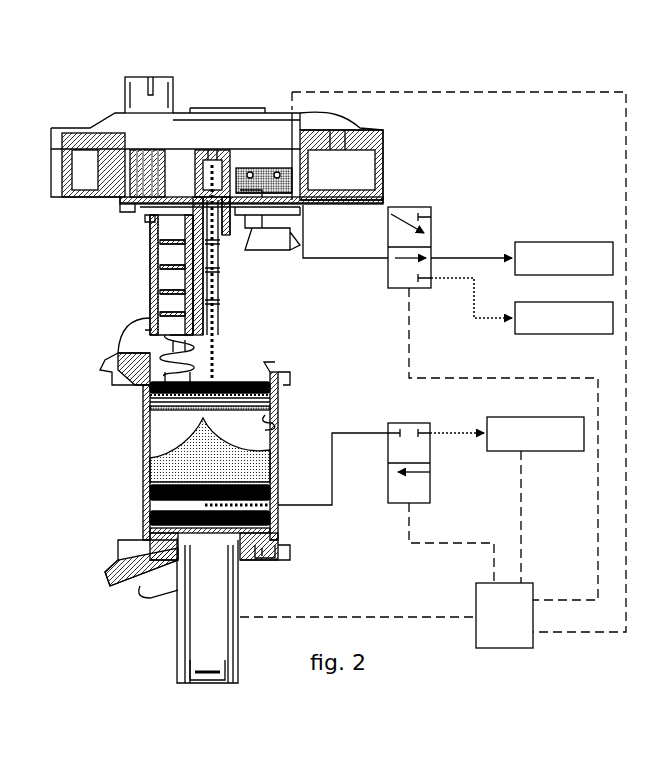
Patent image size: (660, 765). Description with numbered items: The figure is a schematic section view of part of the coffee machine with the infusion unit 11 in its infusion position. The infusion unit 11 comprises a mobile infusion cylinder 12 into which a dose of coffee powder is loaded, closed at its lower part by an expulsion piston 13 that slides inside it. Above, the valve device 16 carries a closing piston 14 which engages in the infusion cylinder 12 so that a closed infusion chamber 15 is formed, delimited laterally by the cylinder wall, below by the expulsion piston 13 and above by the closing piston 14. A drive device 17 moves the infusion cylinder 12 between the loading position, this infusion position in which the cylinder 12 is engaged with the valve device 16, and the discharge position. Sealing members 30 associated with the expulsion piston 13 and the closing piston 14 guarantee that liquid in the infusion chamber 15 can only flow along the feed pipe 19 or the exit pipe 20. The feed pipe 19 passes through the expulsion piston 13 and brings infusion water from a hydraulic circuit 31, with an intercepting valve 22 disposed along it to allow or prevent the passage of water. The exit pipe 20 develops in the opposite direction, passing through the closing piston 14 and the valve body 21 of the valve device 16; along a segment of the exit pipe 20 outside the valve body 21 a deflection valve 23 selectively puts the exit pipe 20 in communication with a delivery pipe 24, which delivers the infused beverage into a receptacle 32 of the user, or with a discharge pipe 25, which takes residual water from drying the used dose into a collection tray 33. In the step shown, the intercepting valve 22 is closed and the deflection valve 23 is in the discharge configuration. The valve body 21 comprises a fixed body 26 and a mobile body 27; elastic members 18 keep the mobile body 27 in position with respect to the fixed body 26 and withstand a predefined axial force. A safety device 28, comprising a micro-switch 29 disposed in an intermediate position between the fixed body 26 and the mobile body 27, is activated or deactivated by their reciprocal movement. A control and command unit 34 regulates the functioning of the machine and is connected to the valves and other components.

The infusion unit 11 is at (112, 372).
The infusion cylinder 12 is at (148, 430).
The expulsion piston 13 is at (160, 483).
The closing piston 14 is at (245, 398).
The infusion chamber 15 is at (272, 423).
The valve device 16 is at (213, 100).
The drive device 17 is at (168, 655).
The elastic members 18 is at (160, 345).
The feed pipe 19 is at (313, 506).
The exit pipe 20 is at (214, 305).
The valve body 21 is at (148, 255).
The intercepting valve 22 is at (433, 483).
The deflection valve 23 is at (433, 222).
The delivery pipe 24 is at (480, 320).
The discharge pipe 25 is at (490, 257).
The fixed body 26 is at (190, 272).
The mobile body 27 is at (157, 292).
The safety device 28 is at (274, 163).
The micro-switch 29 is at (262, 188).
The sealing members 30 is at (226, 379).
The hydraulic circuit 31 is at (535, 434).
The receptacle 32 is at (564, 318).
The collection tray 33 is at (564, 258).
The control and command unit 34 is at (504, 615).